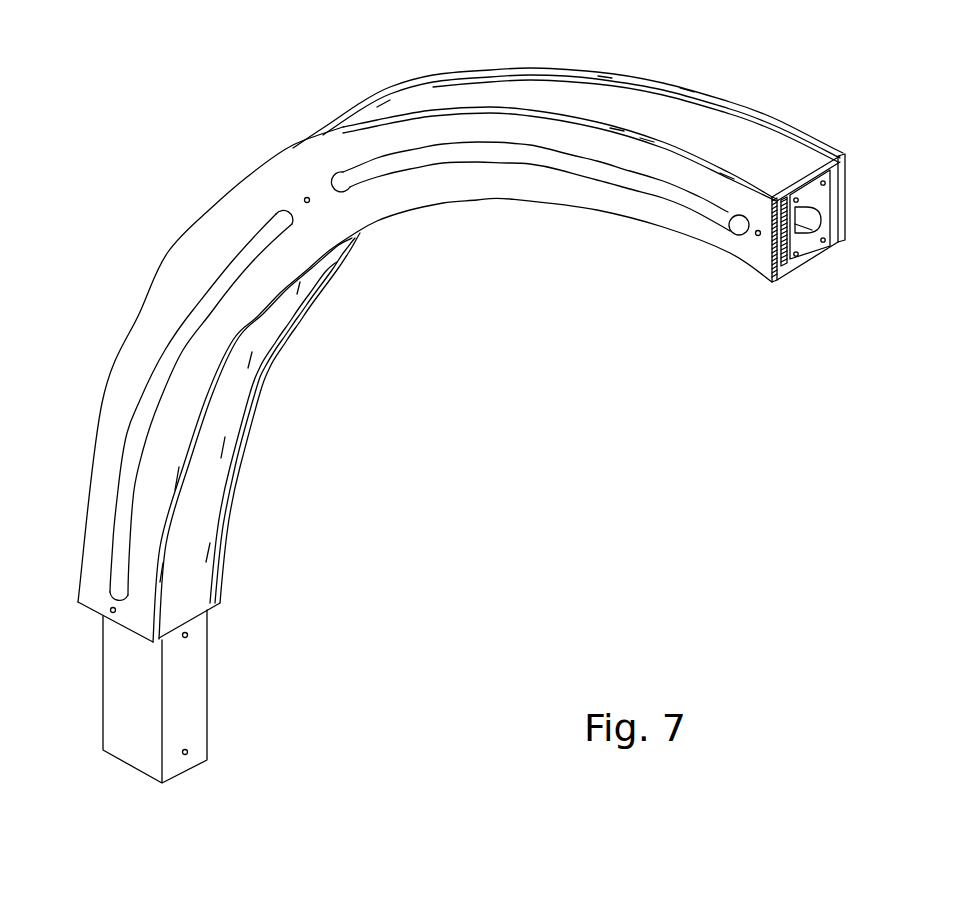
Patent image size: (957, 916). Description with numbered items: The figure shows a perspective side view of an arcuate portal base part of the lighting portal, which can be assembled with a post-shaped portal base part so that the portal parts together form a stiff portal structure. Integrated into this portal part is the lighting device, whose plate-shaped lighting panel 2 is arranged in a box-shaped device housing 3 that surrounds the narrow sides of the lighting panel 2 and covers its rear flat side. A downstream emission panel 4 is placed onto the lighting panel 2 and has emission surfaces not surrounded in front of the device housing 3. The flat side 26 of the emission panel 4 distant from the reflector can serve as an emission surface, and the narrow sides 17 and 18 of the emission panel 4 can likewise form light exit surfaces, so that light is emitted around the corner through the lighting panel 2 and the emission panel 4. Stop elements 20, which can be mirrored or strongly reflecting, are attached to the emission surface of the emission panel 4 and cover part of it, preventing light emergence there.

The lighting panel 2 is at (780, 267).
The device housing 3 is at (435, 97).
The emission panel 4 is at (770, 257).
The narrow side of the emission panel 17 is at (682, 147).
The narrow side of the emission panel 18 is at (705, 247).
The stop element 20 is at (218, 215).
The flat side of the emission panel 26 is at (207, 282).